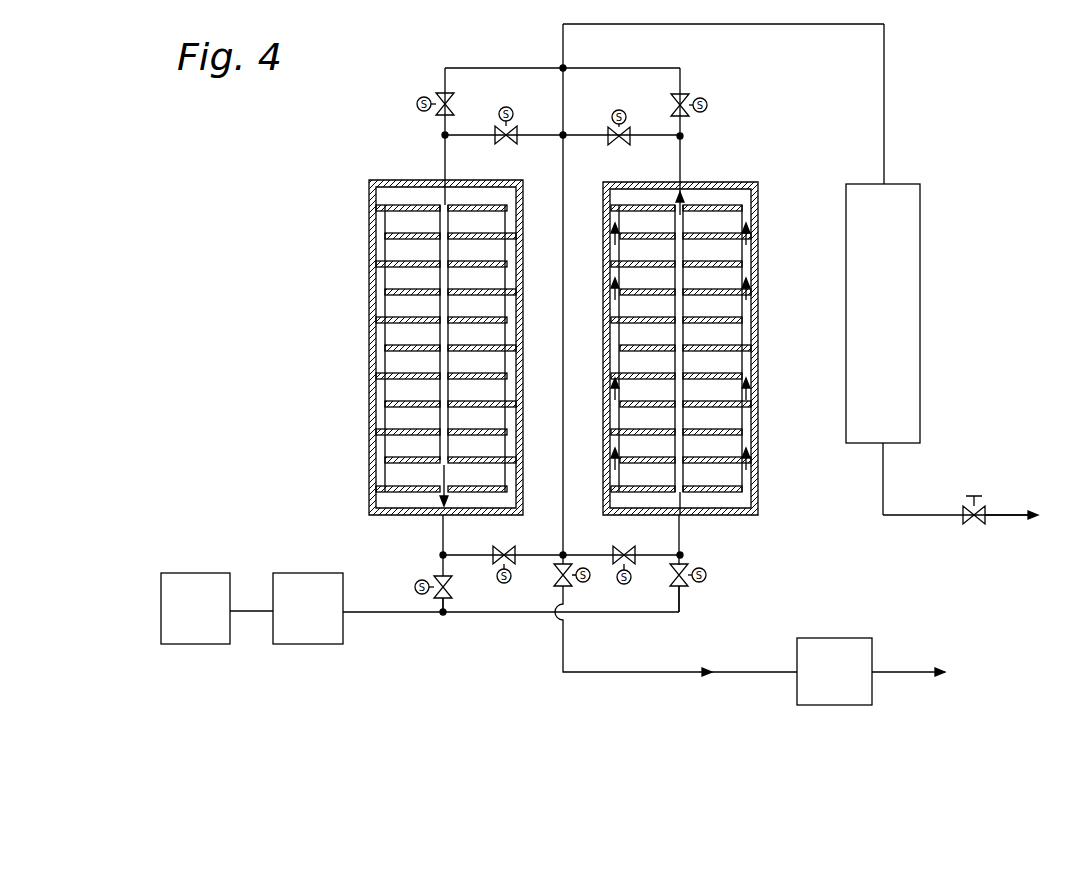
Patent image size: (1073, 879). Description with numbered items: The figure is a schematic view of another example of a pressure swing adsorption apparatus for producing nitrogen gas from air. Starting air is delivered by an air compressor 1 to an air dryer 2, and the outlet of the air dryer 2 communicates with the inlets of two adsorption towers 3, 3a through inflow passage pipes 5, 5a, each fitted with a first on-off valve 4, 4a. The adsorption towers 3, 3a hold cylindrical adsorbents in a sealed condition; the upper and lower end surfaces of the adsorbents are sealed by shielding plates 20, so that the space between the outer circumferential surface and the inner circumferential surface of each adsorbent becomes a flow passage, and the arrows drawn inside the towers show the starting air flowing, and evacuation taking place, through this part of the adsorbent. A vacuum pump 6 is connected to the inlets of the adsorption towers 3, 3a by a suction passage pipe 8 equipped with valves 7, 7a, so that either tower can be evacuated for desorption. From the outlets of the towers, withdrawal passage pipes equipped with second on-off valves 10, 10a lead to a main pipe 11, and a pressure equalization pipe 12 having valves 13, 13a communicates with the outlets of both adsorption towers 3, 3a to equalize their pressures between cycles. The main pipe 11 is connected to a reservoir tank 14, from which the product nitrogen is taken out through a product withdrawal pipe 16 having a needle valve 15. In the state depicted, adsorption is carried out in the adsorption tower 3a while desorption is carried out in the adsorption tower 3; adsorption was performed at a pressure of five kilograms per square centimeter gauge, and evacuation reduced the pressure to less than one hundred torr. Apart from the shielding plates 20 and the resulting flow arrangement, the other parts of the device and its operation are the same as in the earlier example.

The air compressor 1 is at (196, 580).
The air dryer 2 is at (308, 580).
The adsorption tower 3 is at (368, 352).
The adsorption tower 3a is at (711, 309).
The first on-off valve 4 is at (452, 586).
The first on-off valve 4a is at (688, 583).
The inflow passage pipe 5 is at (442, 605).
The inflow passage pipe 5a is at (682, 605).
The vacuum pump 6 is at (842, 645).
The valve 7 is at (510, 548).
The valve 7a is at (628, 548).
The suction passage pipe 8 is at (563, 595).
The second on-off valve 10 is at (439, 95).
The second on-off valve 10a is at (692, 96).
The main pipe 11 is at (826, 22).
The pressure equalization pipe 12 is at (548, 133).
The valve 13 is at (510, 145).
The valve 13a is at (622, 146).
The reservoir tank 14 is at (921, 322).
The needle valve 15 is at (966, 525).
The product withdrawal pipe 16 is at (1010, 513).
The shielding plate 20 is at (752, 535).